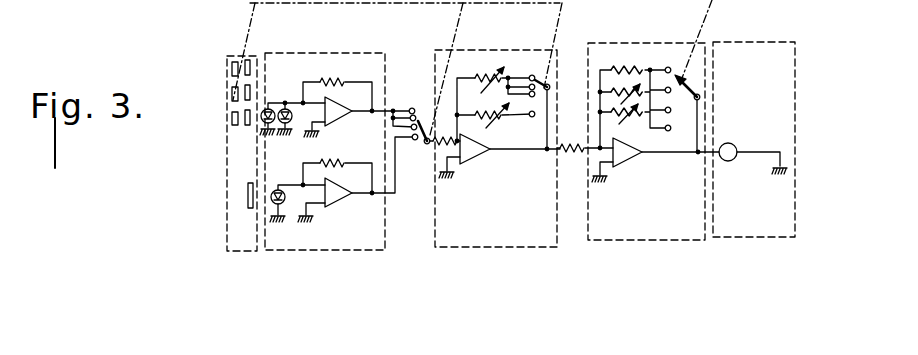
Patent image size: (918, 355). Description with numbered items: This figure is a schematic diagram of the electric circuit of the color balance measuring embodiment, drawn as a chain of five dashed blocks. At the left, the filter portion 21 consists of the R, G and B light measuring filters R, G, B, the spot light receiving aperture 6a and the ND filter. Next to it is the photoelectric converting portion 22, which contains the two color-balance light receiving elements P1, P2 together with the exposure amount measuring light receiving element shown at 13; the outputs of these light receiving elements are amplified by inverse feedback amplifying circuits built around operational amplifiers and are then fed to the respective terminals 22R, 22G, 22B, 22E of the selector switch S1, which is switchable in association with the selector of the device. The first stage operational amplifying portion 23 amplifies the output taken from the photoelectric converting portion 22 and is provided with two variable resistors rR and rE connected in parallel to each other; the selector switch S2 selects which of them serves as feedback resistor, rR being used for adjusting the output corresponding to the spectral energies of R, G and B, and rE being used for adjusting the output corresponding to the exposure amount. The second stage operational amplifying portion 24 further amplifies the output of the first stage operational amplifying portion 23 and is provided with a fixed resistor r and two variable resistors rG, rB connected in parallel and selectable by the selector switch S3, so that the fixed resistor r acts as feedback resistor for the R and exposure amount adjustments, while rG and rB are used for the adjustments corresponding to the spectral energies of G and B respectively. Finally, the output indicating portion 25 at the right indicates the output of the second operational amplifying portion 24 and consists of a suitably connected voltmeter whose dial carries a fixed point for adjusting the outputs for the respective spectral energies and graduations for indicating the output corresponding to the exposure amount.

The filter portion 21 is at (238, 257).
The photoelectric converting portion 22 is at (317, 252).
The first stage operational amplifying portion 23 is at (477, 248).
The second stage operational amplifying portion 24 is at (630, 243).
The output indicating portion 25 is at (740, 240).
The R light measuring filter R is at (231, 65).
The G light measuring filter G is at (231, 90).
The B light measuring filter B is at (231, 114).
The spot light receiving aperture 6a is at (246, 186).
The color-balance light receiving element P1 is at (261, 124).
The color-balance light receiving element P2 is at (293, 121).
The photodiode 13 is at (297, 213).
The terminal 22R is at (414, 107).
The terminal 22G is at (411, 114).
The terminal 22B is at (410, 128).
The terminal 22E is at (414, 141).
The selector switch S1 is at (421, 124).
The selector switch S2 is at (549, 84).
The selector switch S3 is at (684, 79).
The variable resistor rR is at (489, 73).
The variable resistor rE is at (493, 126).
The fixed resistor r is at (626, 60).
The variable resistor rG is at (623, 88).
The variable resistor rB is at (623, 109).